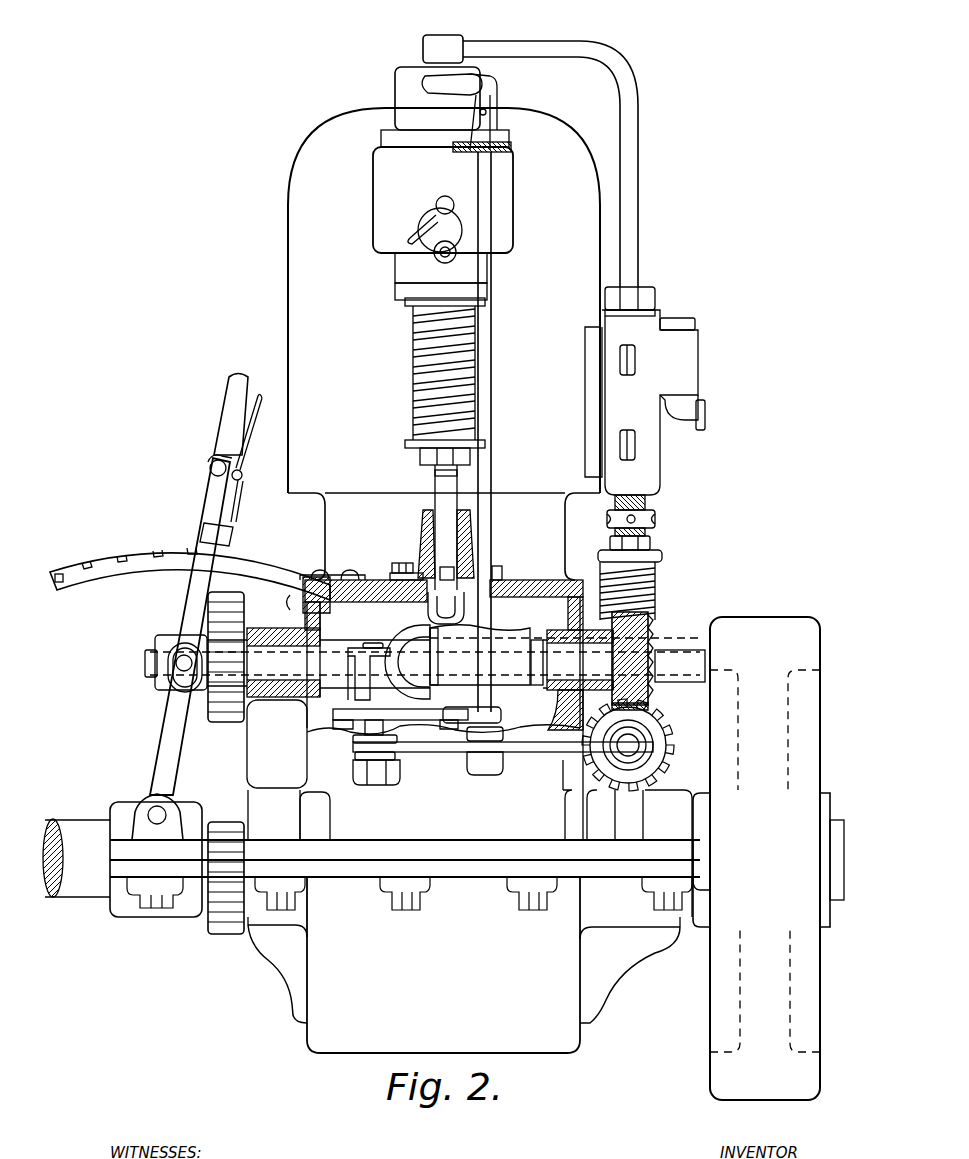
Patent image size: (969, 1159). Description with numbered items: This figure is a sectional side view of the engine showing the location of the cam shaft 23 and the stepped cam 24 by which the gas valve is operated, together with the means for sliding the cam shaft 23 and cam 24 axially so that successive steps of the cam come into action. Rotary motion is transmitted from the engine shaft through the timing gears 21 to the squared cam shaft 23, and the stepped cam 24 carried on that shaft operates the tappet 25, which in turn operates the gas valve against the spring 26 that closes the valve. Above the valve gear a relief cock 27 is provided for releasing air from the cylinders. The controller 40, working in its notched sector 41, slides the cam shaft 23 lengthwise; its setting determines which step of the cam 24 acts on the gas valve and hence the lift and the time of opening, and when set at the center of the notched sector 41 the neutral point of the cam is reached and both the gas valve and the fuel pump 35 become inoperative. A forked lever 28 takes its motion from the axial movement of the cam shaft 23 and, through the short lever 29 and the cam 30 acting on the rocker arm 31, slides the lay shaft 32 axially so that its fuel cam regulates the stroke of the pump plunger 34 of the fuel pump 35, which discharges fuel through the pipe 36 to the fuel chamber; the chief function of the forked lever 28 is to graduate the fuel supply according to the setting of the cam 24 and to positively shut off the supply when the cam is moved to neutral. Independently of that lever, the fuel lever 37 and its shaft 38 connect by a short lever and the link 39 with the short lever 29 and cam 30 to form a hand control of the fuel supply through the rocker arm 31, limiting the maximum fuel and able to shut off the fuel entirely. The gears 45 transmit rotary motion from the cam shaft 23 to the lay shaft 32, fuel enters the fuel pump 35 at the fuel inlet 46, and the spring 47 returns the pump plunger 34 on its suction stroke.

The timing gears 21 is at (208, 704).
The cam shaft 23 is at (145, 666).
The stepped cam 24 is at (480, 655).
The tappet 25 is at (446, 536).
The spring 26 is at (413, 396).
The relief cock 27 is at (440, 245).
The forked lever 28 is at (408, 640).
The short lever 29 is at (350, 730).
The cam 30 is at (355, 760).
The rocker arm 31 is at (412, 750).
The lay shaft 32 is at (631, 745).
The pump plunger 34 is at (650, 566).
The fuel pump 35 is at (641, 394).
The pipe 36 is at (539, 175).
The fuel lever 37 is at (430, 84).
The shaft 38 is at (491, 342).
The link 39 is at (333, 714).
The controller 40 is at (192, 613).
The notched sector 41 is at (190, 580).
The gear 45 is at (642, 638).
The fuel inlet 46 is at (708, 407).
The spring 47 is at (652, 592).